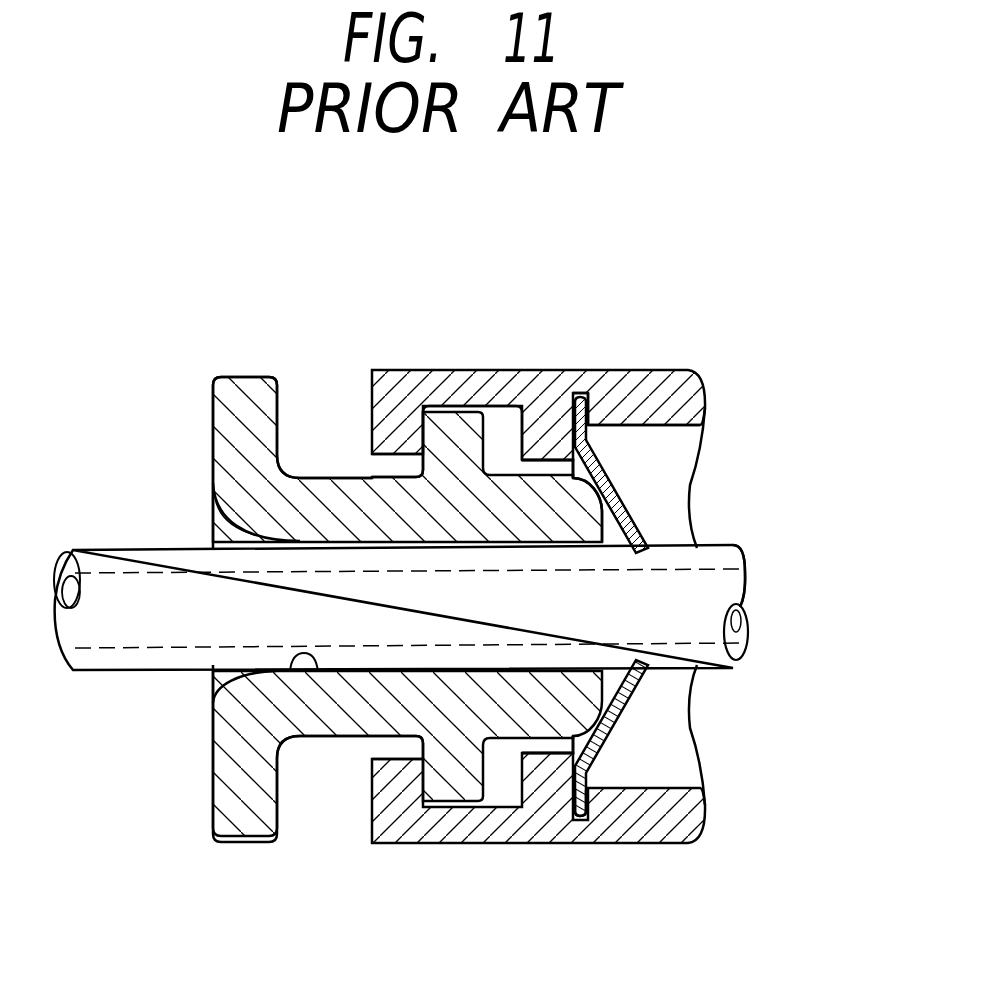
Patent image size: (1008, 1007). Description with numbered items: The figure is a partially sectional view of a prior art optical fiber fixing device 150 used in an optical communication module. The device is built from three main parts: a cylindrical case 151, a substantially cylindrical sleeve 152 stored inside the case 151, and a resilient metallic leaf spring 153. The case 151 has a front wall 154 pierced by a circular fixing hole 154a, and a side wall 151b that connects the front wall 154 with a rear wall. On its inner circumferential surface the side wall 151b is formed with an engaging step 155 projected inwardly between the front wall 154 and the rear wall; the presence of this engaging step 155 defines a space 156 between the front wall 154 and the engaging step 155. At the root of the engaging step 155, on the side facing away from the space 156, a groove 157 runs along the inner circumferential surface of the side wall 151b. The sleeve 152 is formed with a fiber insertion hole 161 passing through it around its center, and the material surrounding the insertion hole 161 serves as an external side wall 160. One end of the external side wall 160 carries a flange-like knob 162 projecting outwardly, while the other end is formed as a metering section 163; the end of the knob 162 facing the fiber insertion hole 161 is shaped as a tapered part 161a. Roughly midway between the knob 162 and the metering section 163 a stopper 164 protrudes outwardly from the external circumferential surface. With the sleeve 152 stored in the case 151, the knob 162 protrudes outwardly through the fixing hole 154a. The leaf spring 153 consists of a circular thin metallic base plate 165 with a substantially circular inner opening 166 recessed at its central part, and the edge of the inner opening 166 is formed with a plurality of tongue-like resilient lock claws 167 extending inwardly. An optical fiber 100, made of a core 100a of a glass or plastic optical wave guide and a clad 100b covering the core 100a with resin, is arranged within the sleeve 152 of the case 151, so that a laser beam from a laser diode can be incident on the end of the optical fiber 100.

The optical fiber 100 is at (100, 550).
The core 100a is at (732, 630).
The clad 100b is at (747, 615).
The optical fiber fixing device 150 is at (362, 358).
The cylindrical case 151 is at (478, 370).
The side wall 151b is at (580, 395).
The cylindrical sleeve 152 is at (240, 376).
The leaf spring 153 is at (625, 515).
The front wall 154 is at (372, 410).
The fixing hole 154a is at (367, 470).
The engaging step 155 is at (545, 443).
The space 156 is at (498, 423).
The groove 157 is at (590, 415).
The external side wall 160 is at (377, 741).
The fiber insertion hole 161 is at (317, 672).
The tapered part 161a is at (231, 700).
The knob 162 is at (232, 800).
The metering section 163 is at (603, 693).
The stopper 164 is at (452, 777).
The base plate 165 is at (585, 812).
The inner opening 166 is at (557, 757).
The lock claws 167 is at (603, 478).